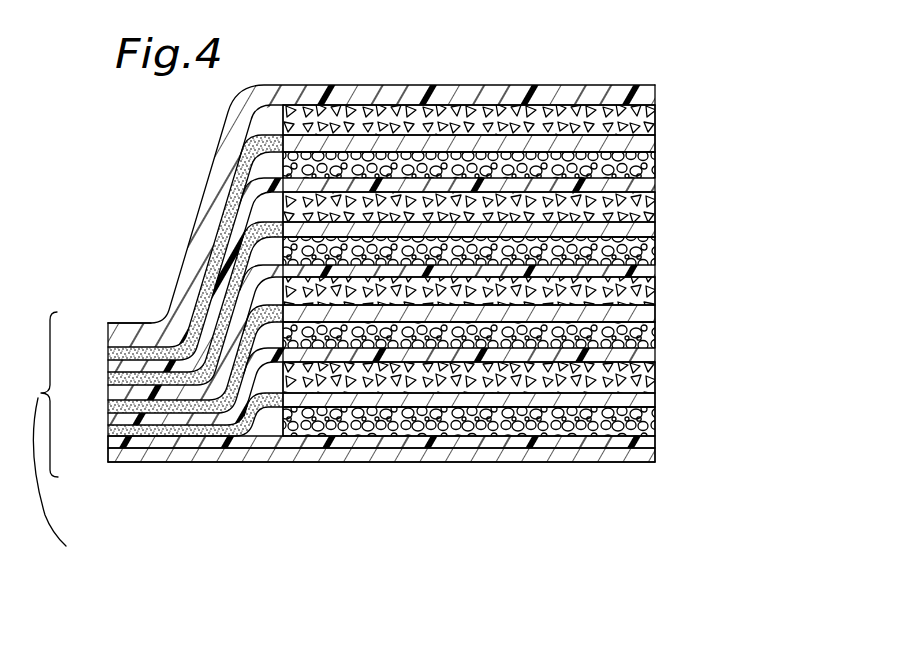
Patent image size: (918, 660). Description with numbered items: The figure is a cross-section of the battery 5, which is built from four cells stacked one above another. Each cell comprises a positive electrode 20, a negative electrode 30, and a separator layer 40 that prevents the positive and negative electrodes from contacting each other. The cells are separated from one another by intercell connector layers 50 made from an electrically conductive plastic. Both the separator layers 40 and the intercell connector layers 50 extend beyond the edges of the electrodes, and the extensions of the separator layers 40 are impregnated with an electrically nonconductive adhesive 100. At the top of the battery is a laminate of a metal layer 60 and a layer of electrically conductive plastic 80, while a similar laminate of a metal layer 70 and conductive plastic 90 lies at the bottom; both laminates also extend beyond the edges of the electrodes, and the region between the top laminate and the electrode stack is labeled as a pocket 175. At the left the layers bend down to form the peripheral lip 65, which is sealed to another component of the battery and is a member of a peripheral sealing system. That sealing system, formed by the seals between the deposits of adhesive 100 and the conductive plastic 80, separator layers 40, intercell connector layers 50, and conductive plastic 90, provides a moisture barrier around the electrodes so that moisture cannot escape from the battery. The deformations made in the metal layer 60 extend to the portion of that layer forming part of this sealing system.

The battery 5 is at (364, 75).
The positive electrode 20 is at (648, 128).
The negative electrode 30 is at (648, 170).
The separator layer 40 is at (650, 145).
The intercell connector layer 50 is at (648, 186).
The metal layer 60 is at (658, 87).
The peripheral lip 65 is at (146, 325).
The metal layer 70 is at (650, 457).
The electrically conductive plastic layer 80 is at (658, 103).
The conductive plastic layer 90 is at (648, 442).
The electrically nonconductive adhesive 100 is at (108, 351).
The pocket 175 is at (513, 85).